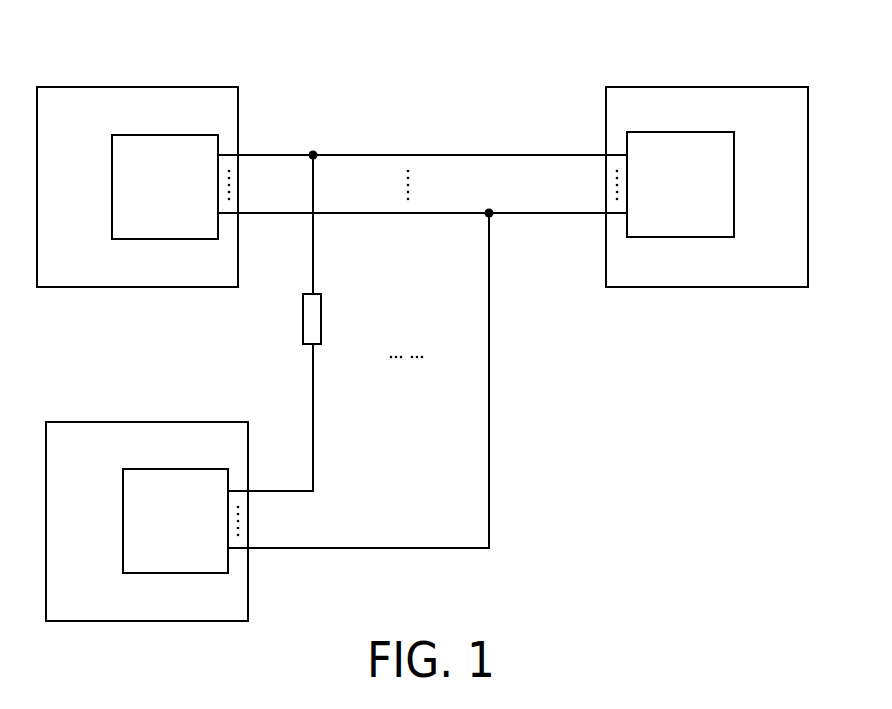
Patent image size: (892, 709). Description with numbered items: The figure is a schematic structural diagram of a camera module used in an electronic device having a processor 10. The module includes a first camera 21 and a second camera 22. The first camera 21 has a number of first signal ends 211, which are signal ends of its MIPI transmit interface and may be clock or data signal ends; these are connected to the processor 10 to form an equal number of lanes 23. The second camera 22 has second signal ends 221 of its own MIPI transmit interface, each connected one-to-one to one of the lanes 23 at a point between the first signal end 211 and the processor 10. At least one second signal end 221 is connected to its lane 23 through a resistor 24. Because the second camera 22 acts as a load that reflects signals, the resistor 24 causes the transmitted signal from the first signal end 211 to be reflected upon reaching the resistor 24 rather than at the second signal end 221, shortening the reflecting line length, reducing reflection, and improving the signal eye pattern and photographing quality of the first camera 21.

The processor 10 is at (712, 87).
The first camera 21 is at (158, 87).
The first signal end 211 is at (222, 153).
The second camera 22 is at (128, 422).
The second signal end 221 is at (240, 548).
The lane 23 is at (372, 155).
The resistor 24 is at (303, 322).